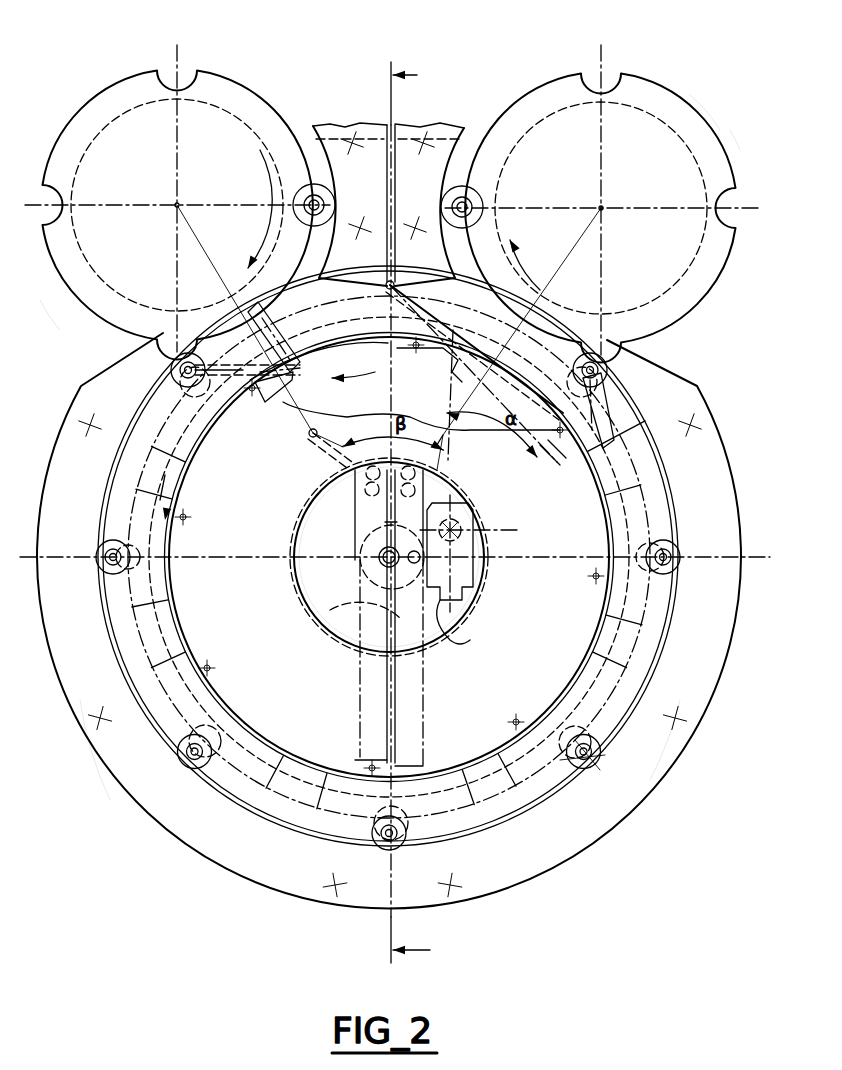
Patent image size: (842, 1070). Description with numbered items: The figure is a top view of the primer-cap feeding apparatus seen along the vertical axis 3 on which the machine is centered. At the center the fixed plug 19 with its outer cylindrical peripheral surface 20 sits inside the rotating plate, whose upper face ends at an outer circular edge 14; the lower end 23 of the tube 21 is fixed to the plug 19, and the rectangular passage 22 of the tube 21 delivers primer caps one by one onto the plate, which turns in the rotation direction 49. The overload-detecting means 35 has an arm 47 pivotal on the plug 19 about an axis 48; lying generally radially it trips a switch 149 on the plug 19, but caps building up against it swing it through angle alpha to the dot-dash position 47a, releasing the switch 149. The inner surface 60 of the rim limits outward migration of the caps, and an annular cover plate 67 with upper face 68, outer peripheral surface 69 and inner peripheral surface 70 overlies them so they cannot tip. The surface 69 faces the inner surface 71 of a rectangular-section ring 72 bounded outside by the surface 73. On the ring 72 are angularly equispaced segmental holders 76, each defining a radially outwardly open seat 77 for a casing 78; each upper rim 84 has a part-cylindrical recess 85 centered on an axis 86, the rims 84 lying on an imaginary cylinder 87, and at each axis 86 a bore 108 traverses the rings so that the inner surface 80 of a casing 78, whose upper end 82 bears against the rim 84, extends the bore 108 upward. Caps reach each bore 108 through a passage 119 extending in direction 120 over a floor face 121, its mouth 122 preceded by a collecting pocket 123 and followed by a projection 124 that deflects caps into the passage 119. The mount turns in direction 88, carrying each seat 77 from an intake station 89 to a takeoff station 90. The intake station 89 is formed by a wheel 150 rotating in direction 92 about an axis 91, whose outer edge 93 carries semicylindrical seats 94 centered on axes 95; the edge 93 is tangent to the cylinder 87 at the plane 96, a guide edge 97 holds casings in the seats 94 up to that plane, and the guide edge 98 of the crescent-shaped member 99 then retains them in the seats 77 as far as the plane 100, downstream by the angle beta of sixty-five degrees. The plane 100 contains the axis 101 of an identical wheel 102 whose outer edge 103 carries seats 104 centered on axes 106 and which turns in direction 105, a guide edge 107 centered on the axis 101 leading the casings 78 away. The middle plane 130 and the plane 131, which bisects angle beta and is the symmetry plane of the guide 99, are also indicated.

The common vertical axis 3 is at (340, 590).
The outer circular edge 14 is at (120, 448).
The plug 19 is at (325, 635).
The outer cylindrical peripheral surface 20 is at (290, 535).
The tube 21 is at (360, 700).
The passage 22 is at (405, 712).
The lower end of tube 23 is at (320, 483).
The overload detecting means 35 is at (495, 575).
The arm 47 is at (548, 480).
The pivoted arm position 47a is at (443, 413).
The pivot axis of arm 48 is at (480, 535).
The rotation direction of plate 49 is at (392, 415).
The inner edge of rim 60 is at (480, 420).
The annular cover plate 67 is at (295, 578).
The upper face of cover 68 is at (300, 525).
The outer peripheral surface of cover 69 is at (600, 630).
The inner peripheral surface of cover 70 is at (310, 615).
The inner peripheral surface of ring 71 is at (483, 758).
The rectangular-section ring 72 is at (500, 830).
The outer peripheral surface of ring 73 is at (672, 760).
The segmental holders 76 is at (640, 490).
The seat 77 is at (376, 278).
The receptacle 78 is at (678, 570).
The inner surface of casing 80 is at (660, 560).
The upper end of casing 82 is at (676, 530).
The upper rim of holder 84 is at (640, 705).
The recess 85 is at (578, 780).
The seat axes 86 is at (600, 760).
The imaginary cylinder 87 is at (660, 640).
The rotation direction of mount 88 is at (175, 483).
The intake station 89 is at (72, 322).
The takeoff station 90 is at (733, 152).
The axis of intake wheel 91 is at (180, 201).
The rotation direction of intake wheel 92 is at (262, 245).
The outer edge of intake wheel 93 is at (268, 100).
The seats of intake wheel 94 is at (188, 70).
The axes of intake wheel seats 95 is at (175, 66).
The plane 96 is at (285, 445).
The guide edge 97 is at (316, 127).
The guide edge 98 is at (165, 605).
The crescent-shaped member 99 is at (125, 780).
The plane 100 is at (585, 265).
The axis of takeoff wheel 101 is at (598, 202).
The takeoff wheel 102 is at (663, 96).
The outer edge of takeoff wheel 103 is at (700, 108).
The seats of takeoff wheel 104 is at (610, 72).
The rotation direction of takeoff wheel 105 is at (525, 270).
The axes of takeoff wheel seats 106 is at (596, 68).
The guide edge 107 is at (470, 132).
The cylindrical bore 108 is at (397, 280).
The passage 119 is at (222, 330).
The extension direction of passage 120 is at (421, 401).
The planar face 121 is at (170, 378).
The mouth of passage 122 is at (318, 355).
The pocket 123 is at (405, 360).
The projection 124 is at (270, 405).
The middle plane 130 is at (750, 548).
The bisecting plane 131 is at (383, 935).
The switch 149 is at (452, 635).
The intake wheel 150 is at (238, 84).